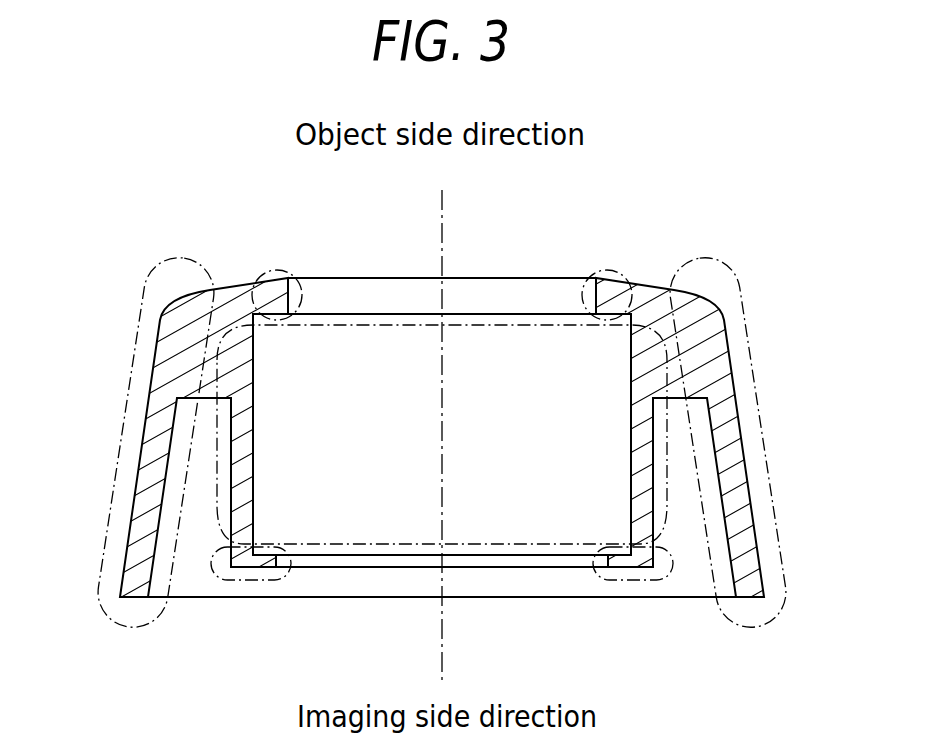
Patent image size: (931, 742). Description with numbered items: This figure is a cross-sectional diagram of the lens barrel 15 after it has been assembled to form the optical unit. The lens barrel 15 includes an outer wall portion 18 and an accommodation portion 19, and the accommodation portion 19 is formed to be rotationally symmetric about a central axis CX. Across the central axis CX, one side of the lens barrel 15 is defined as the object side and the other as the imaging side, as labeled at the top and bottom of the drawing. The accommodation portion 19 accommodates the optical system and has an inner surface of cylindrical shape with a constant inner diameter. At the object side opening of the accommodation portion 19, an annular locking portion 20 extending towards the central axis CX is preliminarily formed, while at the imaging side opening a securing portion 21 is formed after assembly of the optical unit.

The lens barrel 15 is at (212, 599).
The outer wall portion 18 is at (122, 628).
The accommodation portion 19 is at (378, 325).
The locking portion 20 is at (263, 269).
The securing portion 21 is at (263, 582).
The central axis CX is at (443, 452).